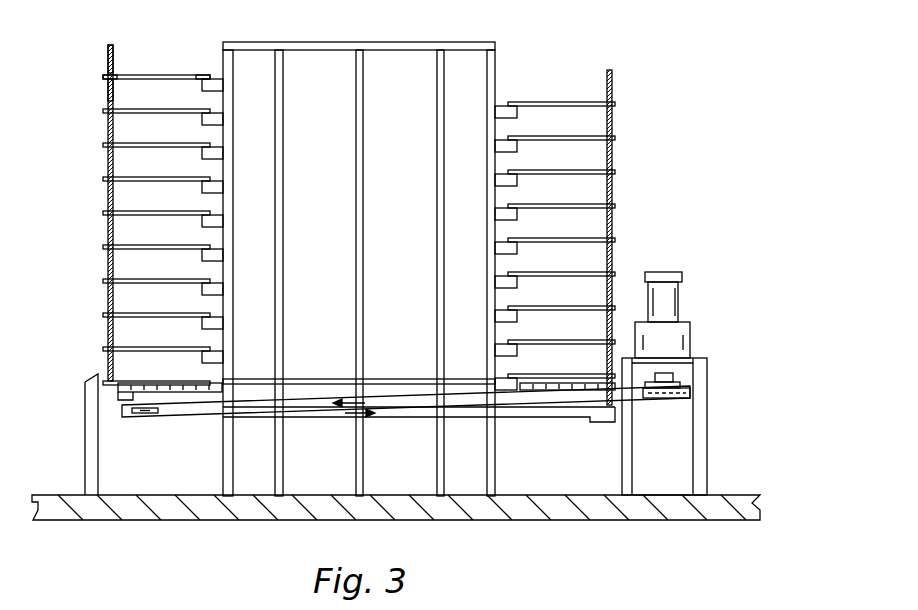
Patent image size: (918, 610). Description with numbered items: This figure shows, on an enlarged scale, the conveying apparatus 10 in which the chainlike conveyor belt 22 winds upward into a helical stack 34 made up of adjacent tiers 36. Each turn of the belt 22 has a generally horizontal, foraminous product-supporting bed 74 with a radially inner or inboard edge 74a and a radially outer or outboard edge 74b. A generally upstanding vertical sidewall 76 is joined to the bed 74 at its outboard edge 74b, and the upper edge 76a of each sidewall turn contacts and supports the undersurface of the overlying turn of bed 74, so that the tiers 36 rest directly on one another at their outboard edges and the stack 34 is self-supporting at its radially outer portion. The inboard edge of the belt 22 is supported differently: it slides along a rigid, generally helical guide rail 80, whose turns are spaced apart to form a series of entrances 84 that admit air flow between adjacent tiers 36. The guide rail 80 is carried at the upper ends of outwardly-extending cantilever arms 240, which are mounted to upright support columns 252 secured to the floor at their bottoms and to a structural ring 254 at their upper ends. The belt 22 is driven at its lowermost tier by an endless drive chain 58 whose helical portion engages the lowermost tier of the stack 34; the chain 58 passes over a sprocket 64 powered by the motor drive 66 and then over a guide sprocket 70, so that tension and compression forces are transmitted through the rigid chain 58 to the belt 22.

The tray handling apparatus 10 is at (597, 28).
The conveyor belt 22 is at (588, 221).
The helical stack 34 is at (616, 121).
The tiers 36 is at (617, 223).
The drive chain 58 is at (212, 423).
The sprocket 64 is at (672, 400).
The motor drive 66 is at (681, 272).
The guide sprocket 70 is at (147, 418).
The bed 74 is at (165, 73).
The inboard edge 74a is at (210, 74).
The outboard edge 74b is at (104, 77).
The sidewall 76 is at (107, 60).
The upper edge of sidewall 76a is at (111, 44).
The helical guide rail 80 is at (204, 87).
The entrances 84 is at (210, 165).
The cantilever arms 240 is at (517, 126).
The support columns 252 is at (283, 128).
The structural ring 254 is at (395, 42).